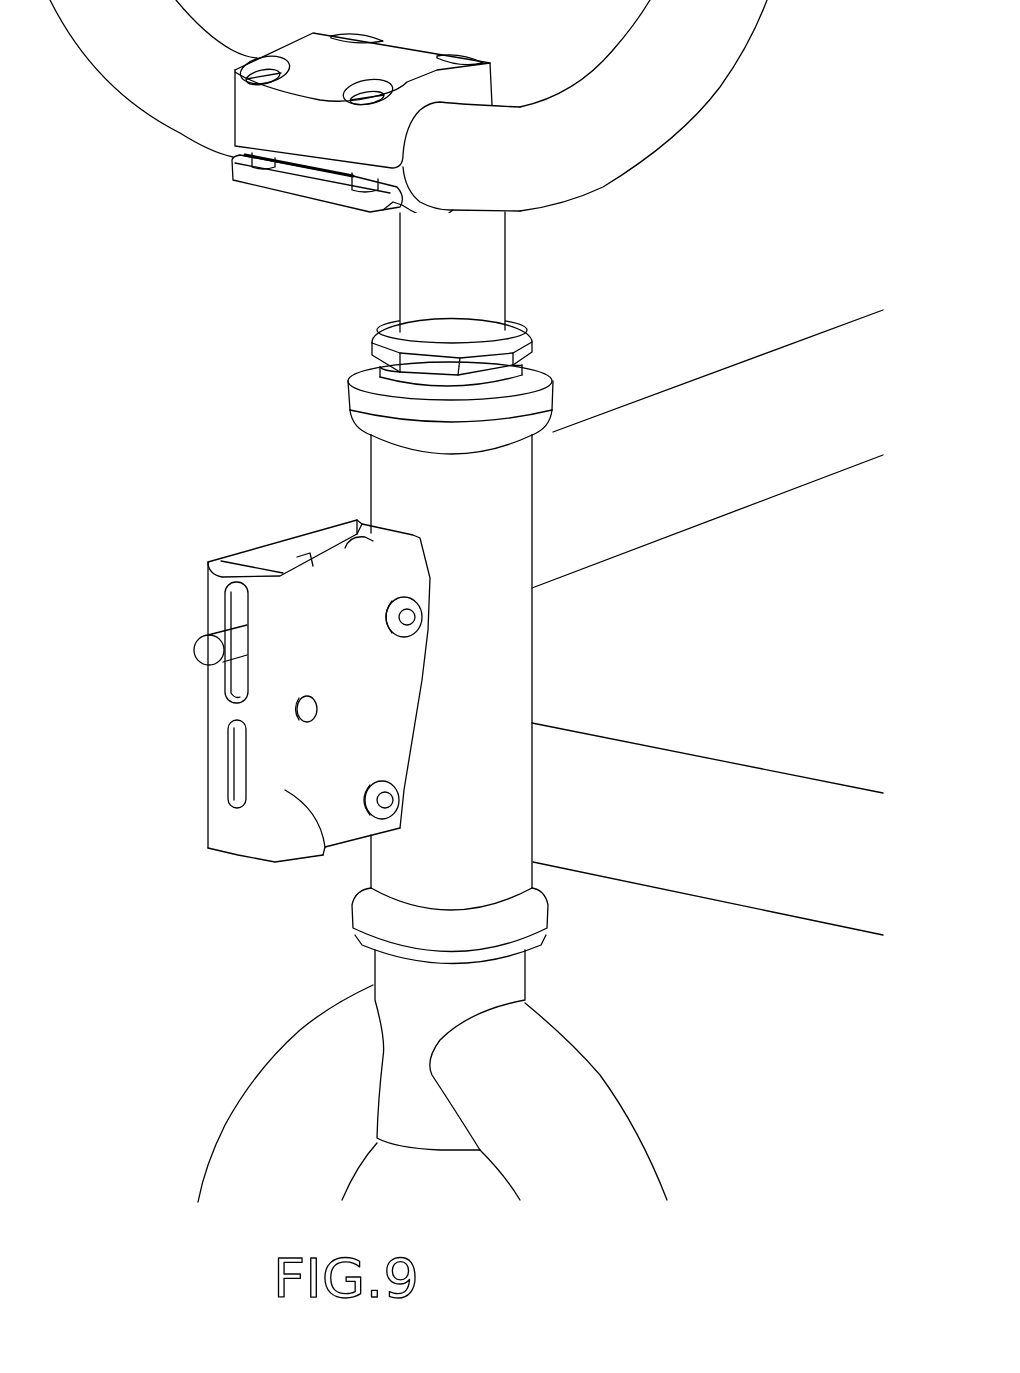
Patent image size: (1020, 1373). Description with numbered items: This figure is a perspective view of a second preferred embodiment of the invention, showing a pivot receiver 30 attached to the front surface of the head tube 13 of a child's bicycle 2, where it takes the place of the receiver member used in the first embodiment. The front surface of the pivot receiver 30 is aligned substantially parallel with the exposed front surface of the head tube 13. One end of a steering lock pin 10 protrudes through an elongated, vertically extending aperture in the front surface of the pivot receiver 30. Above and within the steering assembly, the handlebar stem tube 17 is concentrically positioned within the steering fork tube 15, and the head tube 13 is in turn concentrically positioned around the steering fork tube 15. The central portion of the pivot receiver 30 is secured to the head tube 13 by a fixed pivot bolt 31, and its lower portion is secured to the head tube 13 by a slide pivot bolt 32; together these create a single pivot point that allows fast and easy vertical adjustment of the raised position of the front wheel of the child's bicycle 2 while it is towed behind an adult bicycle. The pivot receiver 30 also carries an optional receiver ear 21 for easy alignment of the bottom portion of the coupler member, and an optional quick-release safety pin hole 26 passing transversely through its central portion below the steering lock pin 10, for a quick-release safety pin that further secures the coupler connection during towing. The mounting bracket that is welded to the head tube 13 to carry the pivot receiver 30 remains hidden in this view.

The child's bicycle 2 is at (745, 353).
The steering lock pin 10 is at (212, 652).
The head tube 13 is at (410, 488).
The steering fork tube 15 is at (498, 978).
The handlebar stem tube 17 is at (452, 288).
The receiver ear 21 is at (305, 840).
The quick-release safety pin hole 26 is at (297, 713).
The pivot receiver 30 is at (323, 608).
The fixed pivot bolt 31 is at (425, 632).
The slide pivot bolt 32 is at (395, 805).